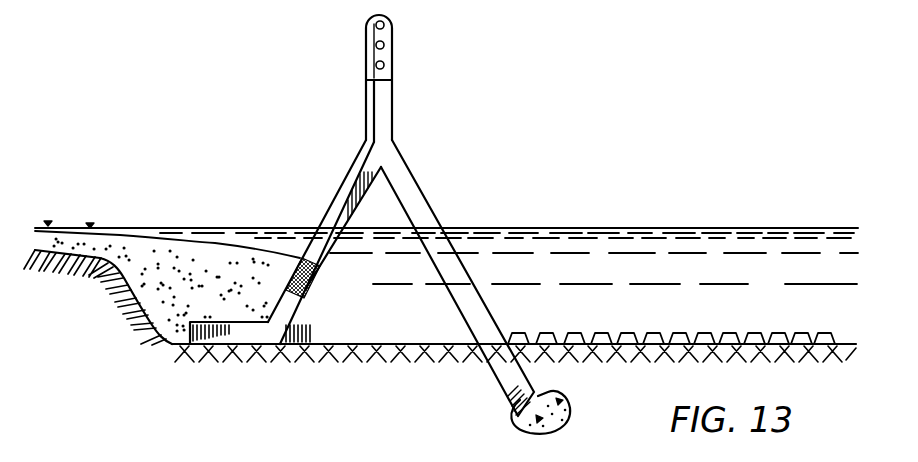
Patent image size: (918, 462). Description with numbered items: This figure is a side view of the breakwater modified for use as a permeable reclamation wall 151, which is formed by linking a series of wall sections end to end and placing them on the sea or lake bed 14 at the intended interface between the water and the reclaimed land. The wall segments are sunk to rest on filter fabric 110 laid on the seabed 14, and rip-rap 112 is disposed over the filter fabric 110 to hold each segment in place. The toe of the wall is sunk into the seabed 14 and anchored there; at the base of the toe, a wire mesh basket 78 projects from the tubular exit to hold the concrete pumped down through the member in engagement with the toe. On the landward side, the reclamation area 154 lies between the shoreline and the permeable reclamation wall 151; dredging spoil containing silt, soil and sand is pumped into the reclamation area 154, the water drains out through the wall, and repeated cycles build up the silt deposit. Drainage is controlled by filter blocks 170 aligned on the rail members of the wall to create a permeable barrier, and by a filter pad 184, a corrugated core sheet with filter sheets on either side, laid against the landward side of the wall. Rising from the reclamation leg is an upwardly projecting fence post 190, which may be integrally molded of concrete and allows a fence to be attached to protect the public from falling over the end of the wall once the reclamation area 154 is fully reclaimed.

The fence post 190 is at (393, 38).
The permeable reclamation wall 151 is at (402, 162).
The filter pad 184 is at (333, 208).
The filter block 170 is at (318, 281).
The reclamation area 154 is at (60, 234).
The sea or lake bed 14 is at (128, 290).
The rip-rap 112 is at (662, 330).
The filter fabric 110 is at (700, 360).
The basket 78 is at (520, 423).